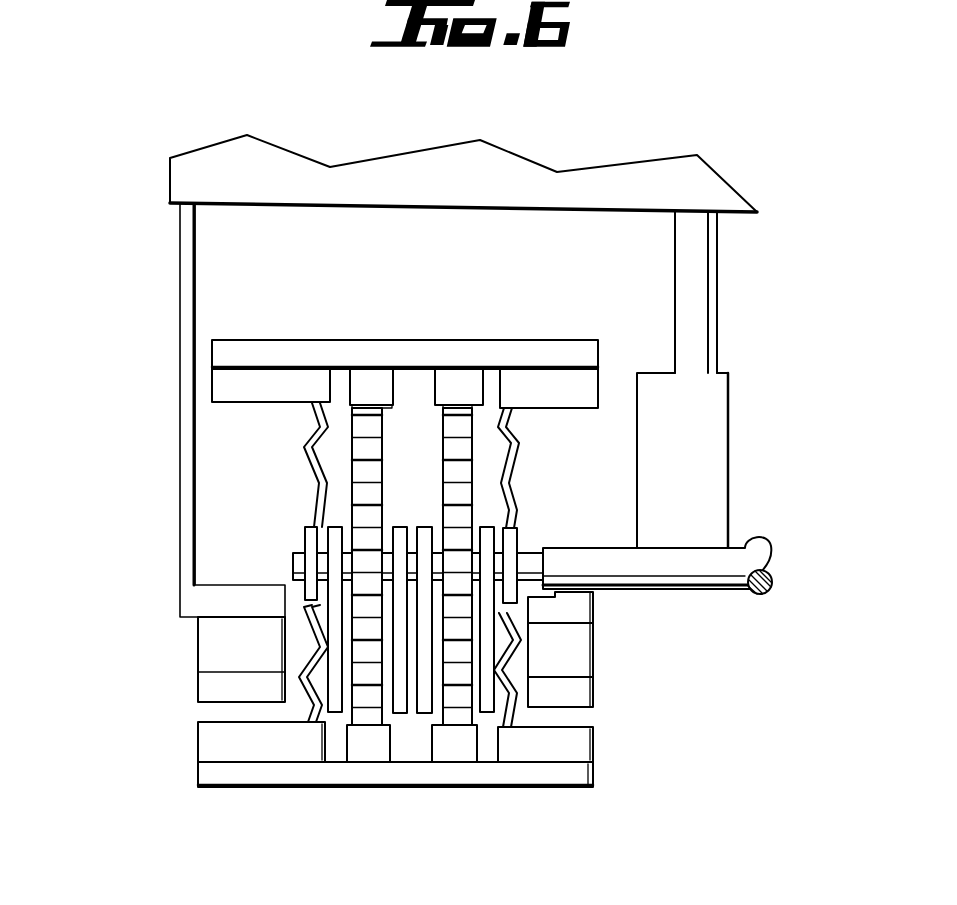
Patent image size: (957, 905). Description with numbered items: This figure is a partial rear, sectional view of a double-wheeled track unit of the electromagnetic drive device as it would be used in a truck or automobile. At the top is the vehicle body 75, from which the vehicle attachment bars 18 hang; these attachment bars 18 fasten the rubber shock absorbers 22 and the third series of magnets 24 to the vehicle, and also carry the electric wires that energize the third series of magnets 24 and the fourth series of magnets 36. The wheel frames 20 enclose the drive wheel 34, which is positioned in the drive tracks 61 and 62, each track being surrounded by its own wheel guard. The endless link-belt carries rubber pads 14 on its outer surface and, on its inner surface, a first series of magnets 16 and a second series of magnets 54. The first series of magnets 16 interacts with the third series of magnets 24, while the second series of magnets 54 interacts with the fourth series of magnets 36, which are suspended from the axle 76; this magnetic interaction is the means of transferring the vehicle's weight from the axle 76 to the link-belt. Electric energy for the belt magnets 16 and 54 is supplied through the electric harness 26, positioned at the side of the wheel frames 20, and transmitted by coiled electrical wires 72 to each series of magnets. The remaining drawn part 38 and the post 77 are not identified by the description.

The rubber pads 14 is at (247, 347).
The first series of magnets 16 is at (218, 738).
The vehicle attachment bars 18 is at (182, 338).
The wheel frames 20 is at (400, 540).
The rubber shock absorbers 22 is at (580, 633).
The third series of magnets 24 is at (217, 693).
The electric harness 26 is at (312, 543).
The drive wheel 34 is at (365, 743).
The fourth series of magnets 36 is at (577, 690).
The shaft 38 is at (522, 540).
The second series of magnets 54 is at (563, 742).
The drive track 61 is at (359, 380).
The drive track 62 is at (455, 380).
The coiled electrical wires 72 is at (313, 440).
The vehicle body 75 is at (513, 180).
The axle 76 is at (752, 555).
The post 77 is at (705, 387).